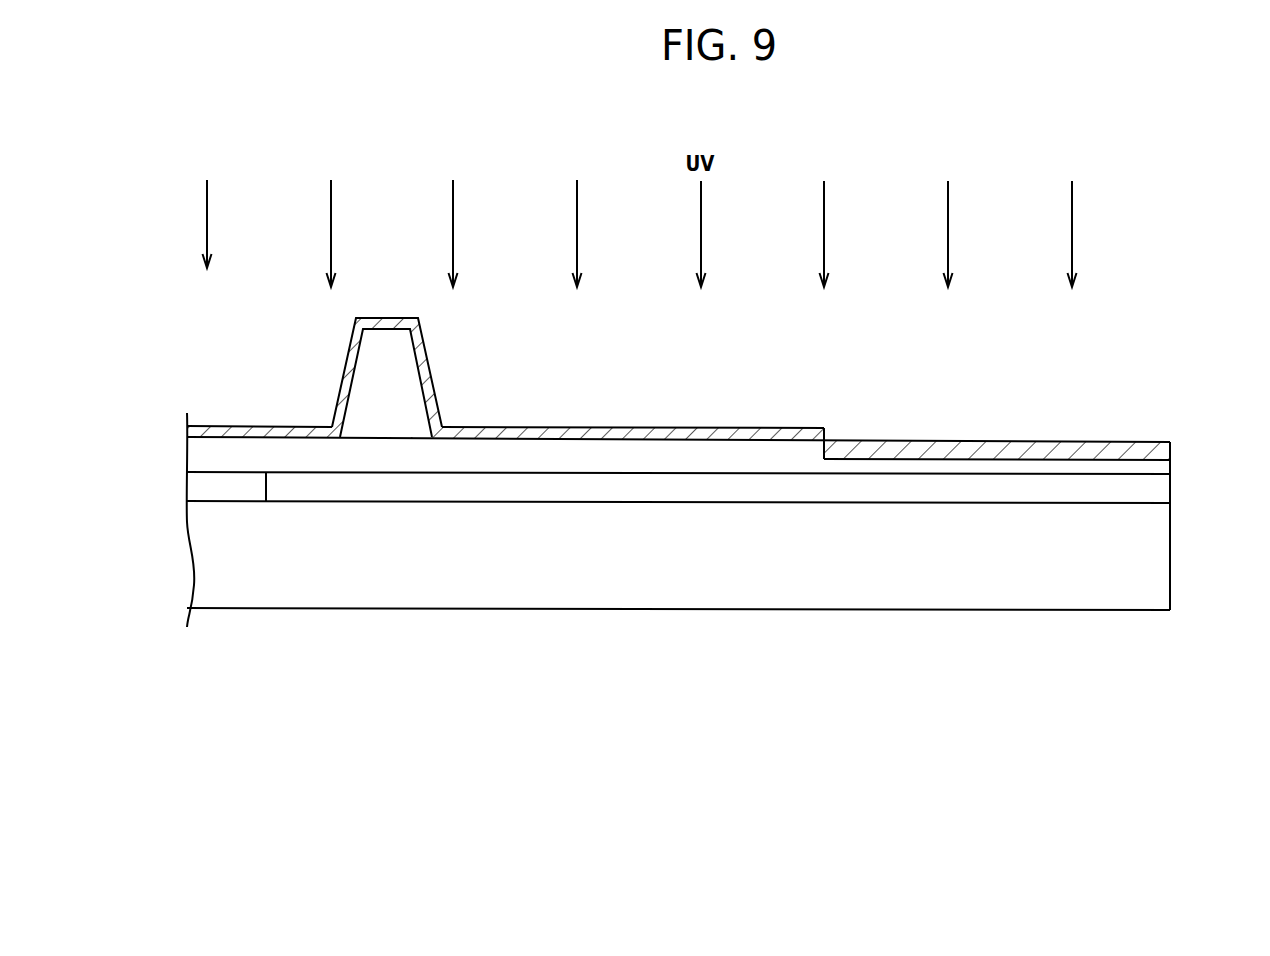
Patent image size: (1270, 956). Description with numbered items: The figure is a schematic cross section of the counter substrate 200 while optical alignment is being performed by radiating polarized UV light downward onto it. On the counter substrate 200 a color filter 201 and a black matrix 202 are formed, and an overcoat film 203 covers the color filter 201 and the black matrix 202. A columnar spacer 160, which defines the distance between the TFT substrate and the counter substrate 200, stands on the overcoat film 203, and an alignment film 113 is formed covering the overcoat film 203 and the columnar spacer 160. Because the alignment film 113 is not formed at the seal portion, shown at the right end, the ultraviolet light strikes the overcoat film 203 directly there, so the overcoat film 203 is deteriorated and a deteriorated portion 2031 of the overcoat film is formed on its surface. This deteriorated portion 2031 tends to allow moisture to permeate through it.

The columnar spacer 160 is at (398, 356).
The alignment film 113 is at (553, 435).
The deteriorated portion of the overcoat film 2031 is at (1102, 450).
The overcoat film 203 is at (1155, 466).
The black matrix 202 is at (1157, 491).
The color filter 201 is at (237, 490).
The counter substrate 200 is at (388, 565).